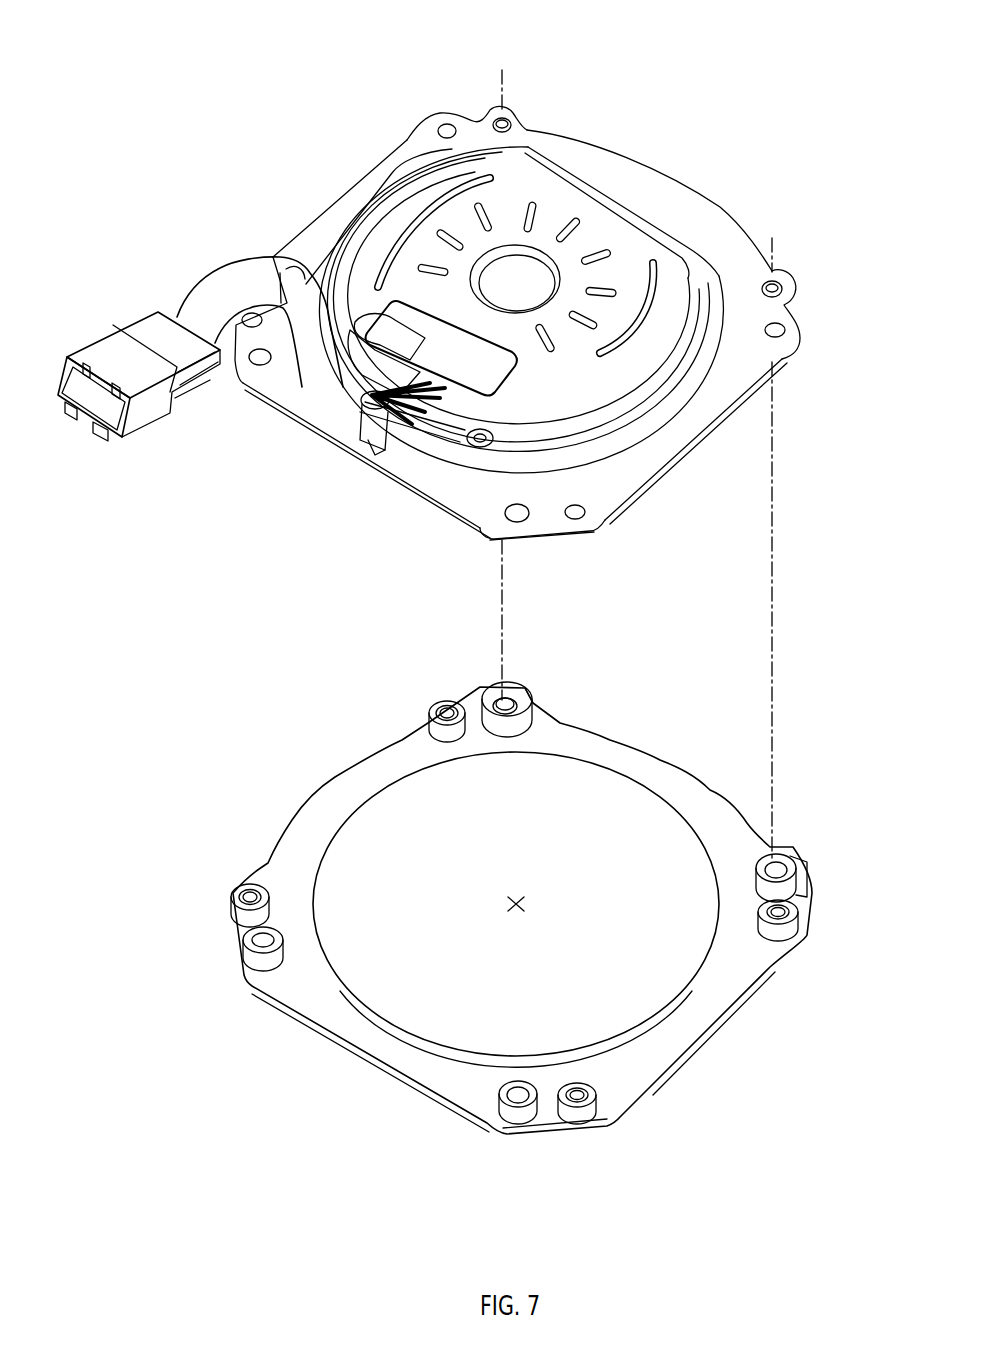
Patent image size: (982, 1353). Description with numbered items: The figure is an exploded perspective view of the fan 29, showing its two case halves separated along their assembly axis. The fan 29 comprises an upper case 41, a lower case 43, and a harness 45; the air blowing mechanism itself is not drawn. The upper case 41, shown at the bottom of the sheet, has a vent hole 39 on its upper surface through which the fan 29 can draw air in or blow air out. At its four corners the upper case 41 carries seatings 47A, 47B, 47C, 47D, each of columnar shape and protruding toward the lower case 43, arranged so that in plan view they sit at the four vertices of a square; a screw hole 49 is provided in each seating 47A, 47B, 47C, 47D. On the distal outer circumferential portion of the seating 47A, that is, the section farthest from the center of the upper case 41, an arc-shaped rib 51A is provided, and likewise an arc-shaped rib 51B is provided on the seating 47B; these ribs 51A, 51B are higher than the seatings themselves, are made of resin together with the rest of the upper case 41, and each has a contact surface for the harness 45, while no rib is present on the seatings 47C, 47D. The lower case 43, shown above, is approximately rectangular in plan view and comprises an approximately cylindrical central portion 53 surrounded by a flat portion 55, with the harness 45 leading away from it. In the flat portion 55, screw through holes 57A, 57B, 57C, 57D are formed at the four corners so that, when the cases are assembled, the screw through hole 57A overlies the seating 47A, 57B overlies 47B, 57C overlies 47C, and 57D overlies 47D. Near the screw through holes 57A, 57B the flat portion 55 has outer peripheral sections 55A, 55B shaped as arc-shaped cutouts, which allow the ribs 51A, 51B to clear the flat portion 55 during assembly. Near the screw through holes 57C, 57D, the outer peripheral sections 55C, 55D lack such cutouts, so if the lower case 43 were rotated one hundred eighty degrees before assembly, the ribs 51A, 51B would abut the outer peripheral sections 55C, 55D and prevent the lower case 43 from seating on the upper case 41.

The fan 29 is at (778, 87).
The vent hole 39 is at (527, 900).
The upper case 41 is at (643, 765).
The lower case 43 is at (642, 170).
The harness 45 is at (225, 285).
The seating 47A is at (505, 730).
The seating 47B is at (755, 884).
The seating 47C is at (522, 1115).
The seating 47D is at (267, 963).
The screw hole 49 is at (497, 700).
The rib 51A is at (506, 703).
The rib 51B is at (778, 853).
The central portion 53 is at (400, 200).
The flat portion 55 is at (340, 213).
The outer peripheral section 55A is at (485, 112).
The outer peripheral section 55B is at (787, 288).
The outer peripheral section 55C is at (465, 502).
The outer peripheral section 55D is at (277, 385).
The screw through hole 57A is at (505, 117).
The screw through hole 57B is at (775, 272).
The screw through hole 57C is at (527, 512).
The screw through hole 57D is at (258, 362).